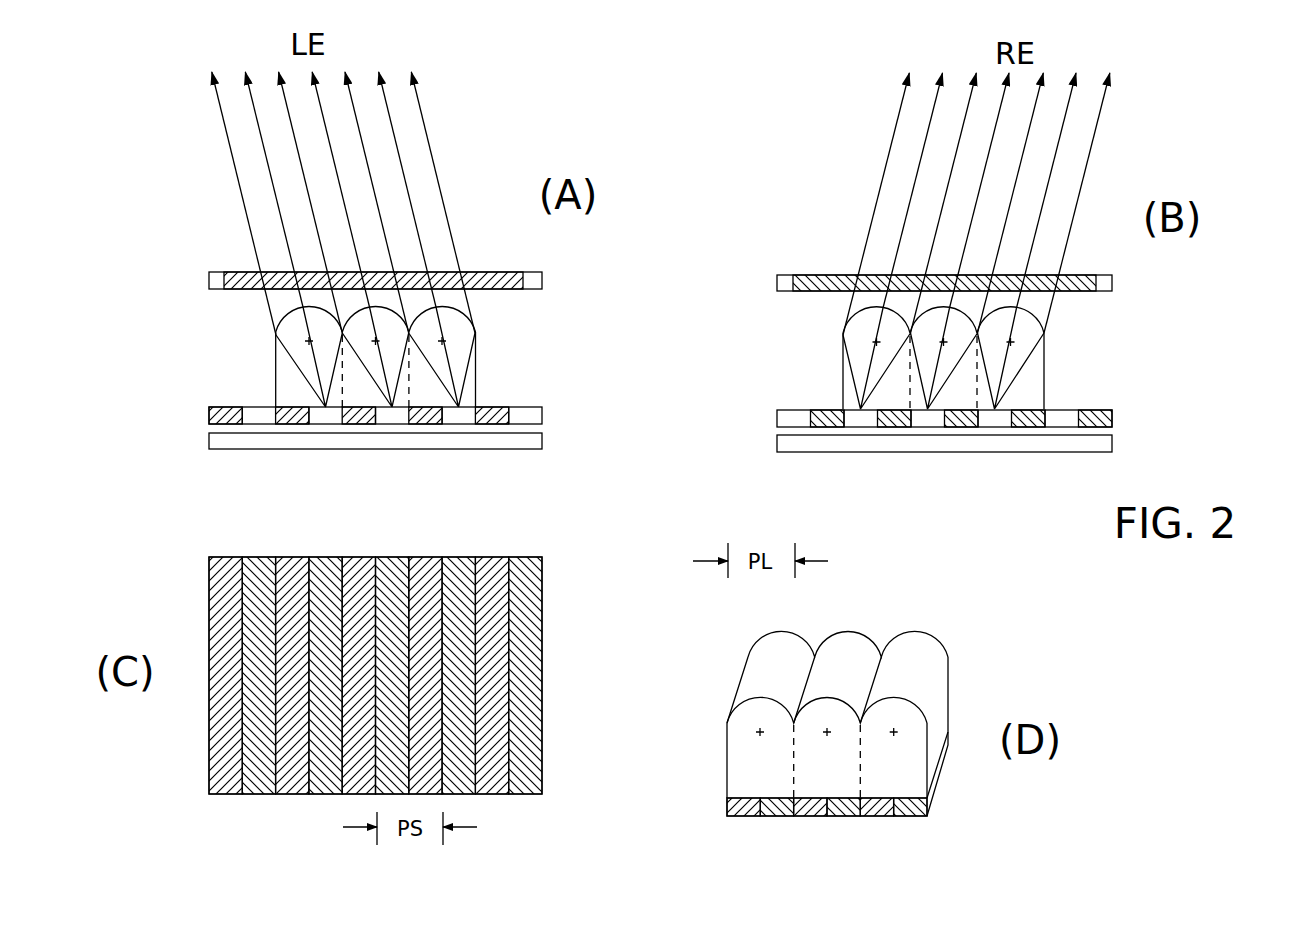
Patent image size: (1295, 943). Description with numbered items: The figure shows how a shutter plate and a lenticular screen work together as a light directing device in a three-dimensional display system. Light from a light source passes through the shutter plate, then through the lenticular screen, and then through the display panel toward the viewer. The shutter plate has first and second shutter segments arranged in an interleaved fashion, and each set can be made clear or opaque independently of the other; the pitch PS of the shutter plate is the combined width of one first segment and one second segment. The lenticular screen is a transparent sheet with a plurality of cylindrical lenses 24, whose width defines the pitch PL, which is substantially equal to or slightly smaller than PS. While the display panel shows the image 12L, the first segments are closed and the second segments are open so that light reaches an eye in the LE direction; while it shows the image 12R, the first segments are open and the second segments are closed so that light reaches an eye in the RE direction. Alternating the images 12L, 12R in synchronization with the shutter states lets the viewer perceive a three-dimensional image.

The image 12L is at (472, 272).
The image 12R is at (845, 275).
The cylindrical lenses 24 is at (782, 632).